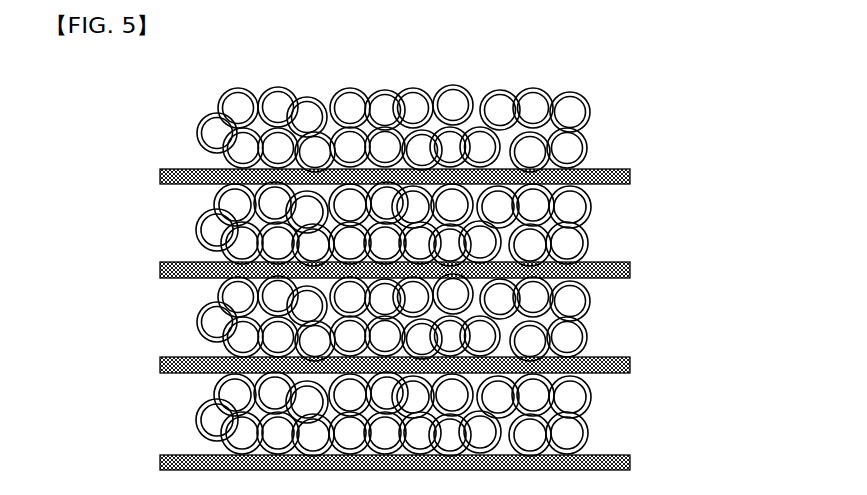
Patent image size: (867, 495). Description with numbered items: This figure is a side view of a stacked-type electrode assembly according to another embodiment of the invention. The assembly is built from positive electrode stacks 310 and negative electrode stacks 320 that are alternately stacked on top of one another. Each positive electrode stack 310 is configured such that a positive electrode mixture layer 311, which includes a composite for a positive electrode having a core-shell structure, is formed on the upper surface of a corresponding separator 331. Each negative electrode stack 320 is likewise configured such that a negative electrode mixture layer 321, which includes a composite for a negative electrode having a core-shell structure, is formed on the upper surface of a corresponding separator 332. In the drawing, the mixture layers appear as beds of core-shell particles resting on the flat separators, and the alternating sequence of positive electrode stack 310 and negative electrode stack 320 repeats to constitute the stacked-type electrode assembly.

The positive electrode stack 310 is at (153, 85).
The negative electrode stack 320 is at (158, 187).
The positive electrode mixture layer 311 is at (604, 117).
The negative electrode mixture layer 321 is at (604, 211).
The separator 331 is at (630, 172).
The separator 332 is at (630, 268).